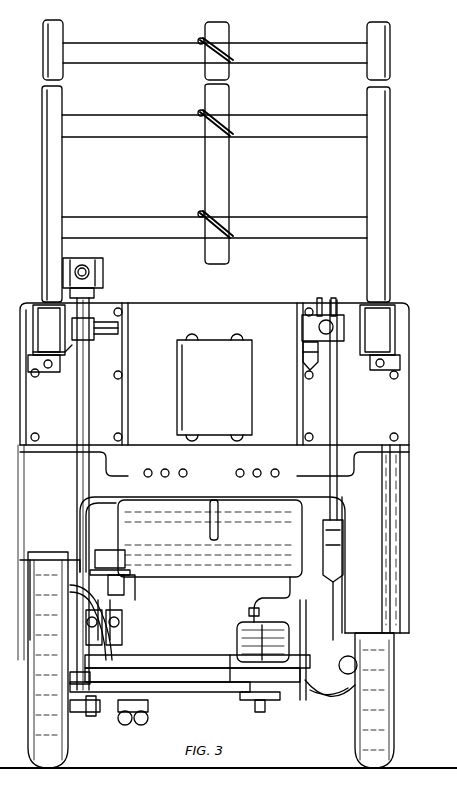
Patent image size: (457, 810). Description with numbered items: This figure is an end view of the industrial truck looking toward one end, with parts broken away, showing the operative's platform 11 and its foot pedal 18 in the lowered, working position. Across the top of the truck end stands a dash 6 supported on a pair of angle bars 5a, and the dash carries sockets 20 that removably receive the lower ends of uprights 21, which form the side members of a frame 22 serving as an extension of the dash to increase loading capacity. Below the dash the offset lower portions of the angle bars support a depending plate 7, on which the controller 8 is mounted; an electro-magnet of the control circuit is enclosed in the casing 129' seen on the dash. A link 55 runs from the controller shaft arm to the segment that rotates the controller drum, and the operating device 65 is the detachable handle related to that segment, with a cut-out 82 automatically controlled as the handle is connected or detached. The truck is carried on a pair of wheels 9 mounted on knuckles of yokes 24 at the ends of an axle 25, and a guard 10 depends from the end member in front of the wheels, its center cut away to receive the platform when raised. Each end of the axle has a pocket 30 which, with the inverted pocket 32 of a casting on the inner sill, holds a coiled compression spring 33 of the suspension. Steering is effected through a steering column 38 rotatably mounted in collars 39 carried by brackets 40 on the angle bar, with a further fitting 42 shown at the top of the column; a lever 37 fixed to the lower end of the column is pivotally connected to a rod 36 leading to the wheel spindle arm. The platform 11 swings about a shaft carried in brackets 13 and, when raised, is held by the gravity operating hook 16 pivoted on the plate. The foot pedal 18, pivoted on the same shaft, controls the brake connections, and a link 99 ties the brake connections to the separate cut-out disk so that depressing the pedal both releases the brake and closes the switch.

The angle bar 5a is at (120, 402).
The dash 6 is at (253, 311).
The depending plate 7 is at (210, 548).
The controller 8 is at (176, 508).
The wheels 9 is at (30, 718).
The guard 10 is at (388, 598).
The operative's platform 11 is at (192, 668).
The bracket 13 is at (300, 635).
The gravity operating hook 16 is at (218, 530).
The foot pedal 18 is at (250, 635).
The socket 20 is at (48, 328).
The upright 21 is at (52, 182).
The frame 22 is at (214, 143).
The yoke 24 is at (75, 600).
The axle 25 is at (135, 625).
The pocket 30 is at (120, 576).
The inverted pocket 32 is at (105, 560).
The coiled compression spring 33 is at (62, 575).
The rod 36 is at (125, 726).
The lever 37 is at (95, 712).
The steering column 38 is at (77, 405).
The collar 39 is at (72, 358).
The bracket 40 is at (108, 340).
The upper bracket 42 is at (85, 260).
The link 55 is at (338, 405).
The operating device 65 is at (334, 318).
The cut-out 82 is at (303, 352).
The link 99 is at (272, 590).
The casing 129' is at (214, 387).